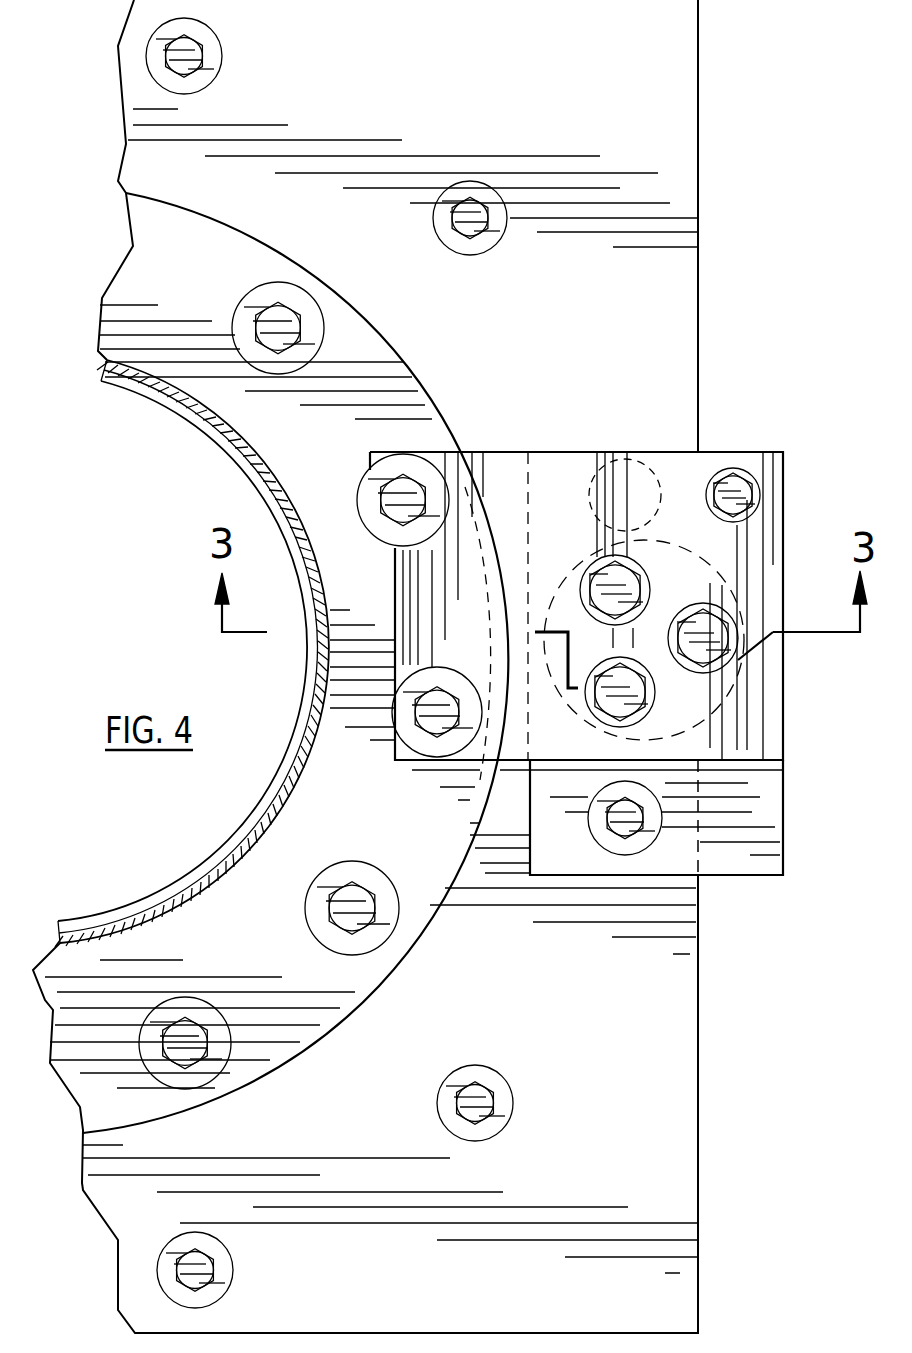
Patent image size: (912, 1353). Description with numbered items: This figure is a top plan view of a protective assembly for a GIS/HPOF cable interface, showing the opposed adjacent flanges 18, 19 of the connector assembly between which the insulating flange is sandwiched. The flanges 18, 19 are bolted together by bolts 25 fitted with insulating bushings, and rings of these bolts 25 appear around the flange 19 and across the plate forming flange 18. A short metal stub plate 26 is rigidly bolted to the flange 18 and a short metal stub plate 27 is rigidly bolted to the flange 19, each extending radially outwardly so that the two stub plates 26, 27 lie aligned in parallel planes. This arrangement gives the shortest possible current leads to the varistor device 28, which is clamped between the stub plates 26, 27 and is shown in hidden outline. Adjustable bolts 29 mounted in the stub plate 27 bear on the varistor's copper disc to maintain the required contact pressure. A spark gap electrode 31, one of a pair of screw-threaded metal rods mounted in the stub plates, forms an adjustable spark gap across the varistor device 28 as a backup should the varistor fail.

The flange 18 is at (699, 1020).
The flange 19 is at (232, 242).
The bolts 25 is at (418, 482).
The stub plate 26 is at (750, 867).
The stub plate 27 is at (546, 460).
The varistor device 28 is at (558, 590).
The adjustable bolts 29 is at (800, 697).
The spark gap electrode 31 is at (748, 497).